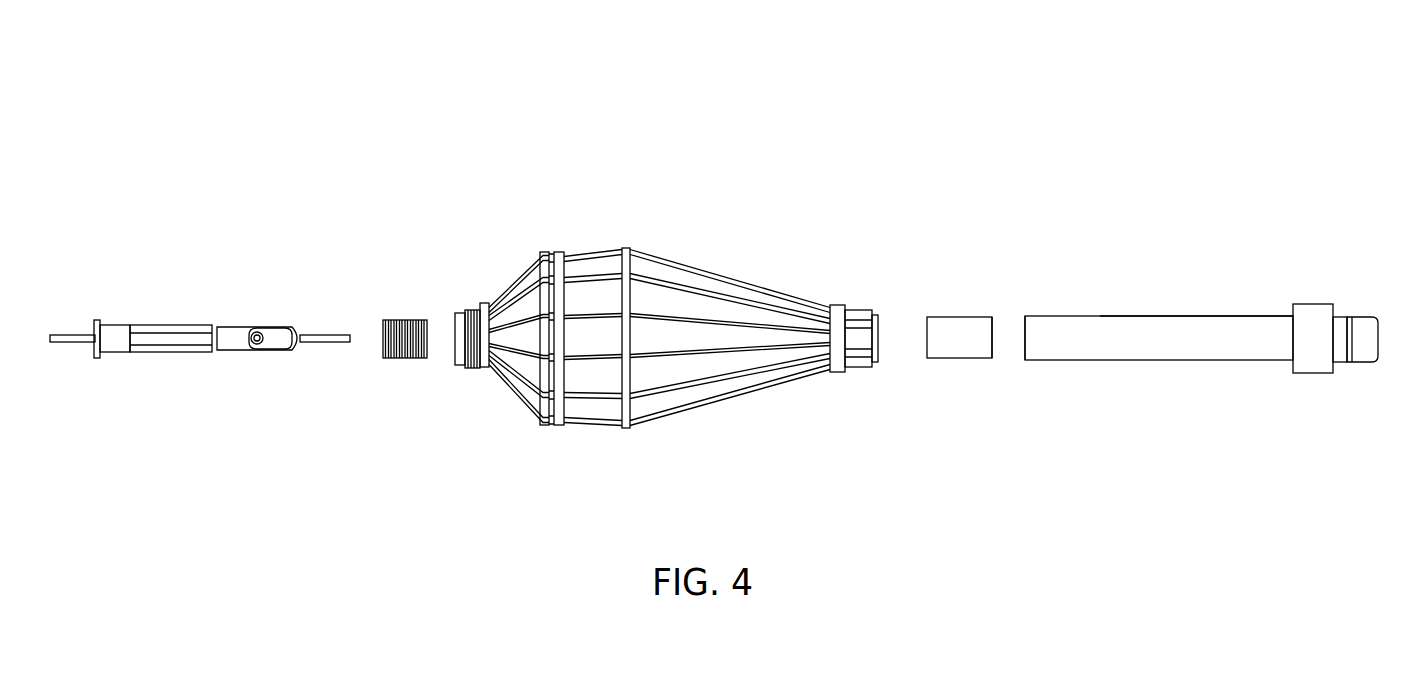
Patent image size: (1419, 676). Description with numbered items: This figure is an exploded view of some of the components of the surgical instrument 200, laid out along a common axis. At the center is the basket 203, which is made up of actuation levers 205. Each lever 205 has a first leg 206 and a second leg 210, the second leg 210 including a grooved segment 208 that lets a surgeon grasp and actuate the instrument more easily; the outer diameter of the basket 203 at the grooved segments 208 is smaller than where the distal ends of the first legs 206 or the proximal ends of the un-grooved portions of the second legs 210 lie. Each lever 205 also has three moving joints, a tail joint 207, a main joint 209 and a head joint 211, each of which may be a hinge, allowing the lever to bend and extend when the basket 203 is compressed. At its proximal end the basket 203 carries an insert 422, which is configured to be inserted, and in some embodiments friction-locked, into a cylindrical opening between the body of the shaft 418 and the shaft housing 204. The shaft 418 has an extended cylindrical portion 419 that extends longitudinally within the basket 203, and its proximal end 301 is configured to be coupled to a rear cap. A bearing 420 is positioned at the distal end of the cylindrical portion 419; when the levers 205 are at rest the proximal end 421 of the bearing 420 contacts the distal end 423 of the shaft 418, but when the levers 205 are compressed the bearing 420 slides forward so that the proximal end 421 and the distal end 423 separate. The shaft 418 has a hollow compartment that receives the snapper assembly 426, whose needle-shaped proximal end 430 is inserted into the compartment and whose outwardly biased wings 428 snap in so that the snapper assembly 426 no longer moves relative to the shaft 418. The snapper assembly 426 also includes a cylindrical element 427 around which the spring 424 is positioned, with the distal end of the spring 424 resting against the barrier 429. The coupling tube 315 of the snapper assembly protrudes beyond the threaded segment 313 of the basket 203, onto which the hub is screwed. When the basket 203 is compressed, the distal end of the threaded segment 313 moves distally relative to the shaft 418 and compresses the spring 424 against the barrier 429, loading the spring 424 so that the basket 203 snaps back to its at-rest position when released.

The surgical instrument 200 is at (503, 78).
The basket 203 is at (705, 195).
The shaft housing 204 is at (1312, 302).
The actuation lever 205 is at (752, 398).
The first leg 206 is at (630, 240).
The tail joint 207 is at (830, 382).
The grooved segment 208 is at (563, 245).
The main joint 209 is at (543, 250).
The second leg 210 is at (538, 240).
The head joint 211 is at (489, 378).
The proximal end of the shaft 301 is at (1365, 314).
The threaded segment 313 is at (468, 312).
The coupling tube 315 is at (67, 332).
The shaft 418 is at (1207, 312).
The extended cylindrical portion 419 is at (1115, 316).
The bearing 420 is at (945, 327).
The proximal end of bearing 421 is at (997, 320).
The insert 422 is at (860, 308).
The distal end of shaft 423 is at (1025, 316).
The spring 424 is at (402, 320).
The snapper assembly 426 is at (168, 313).
The cylindrical element 427 is at (123, 306).
The wings 428 is at (270, 325).
The barrier 429 is at (99, 320).
The needle-shaped proximal end 430 is at (322, 332).